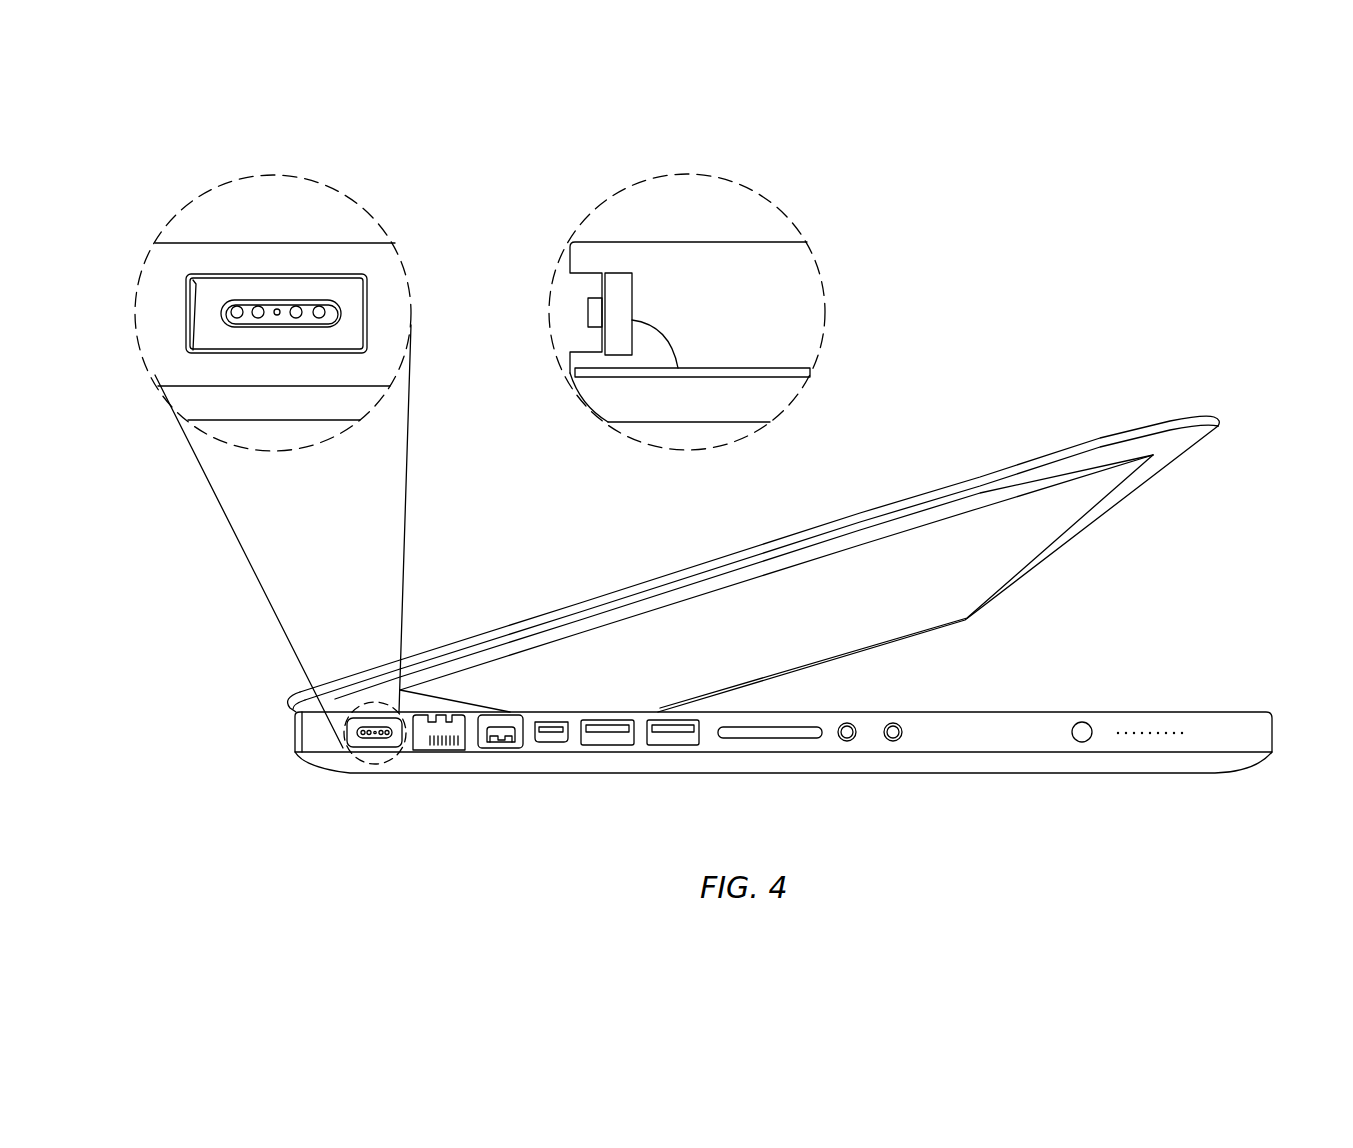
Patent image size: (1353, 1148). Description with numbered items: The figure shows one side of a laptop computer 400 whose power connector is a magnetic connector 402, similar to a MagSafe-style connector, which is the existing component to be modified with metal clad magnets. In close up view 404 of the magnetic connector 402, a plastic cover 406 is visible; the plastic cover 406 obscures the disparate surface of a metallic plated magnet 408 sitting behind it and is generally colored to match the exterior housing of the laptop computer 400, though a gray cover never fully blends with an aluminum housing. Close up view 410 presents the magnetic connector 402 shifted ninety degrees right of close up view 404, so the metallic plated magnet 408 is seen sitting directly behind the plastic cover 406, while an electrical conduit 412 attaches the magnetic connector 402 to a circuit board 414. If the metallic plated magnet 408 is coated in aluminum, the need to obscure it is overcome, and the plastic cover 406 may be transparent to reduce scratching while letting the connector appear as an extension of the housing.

The laptop computer 400 is at (524, 617).
The magnetic connector 402 is at (237, 272).
The close up view 404 is at (367, 208).
The plastic cover 406 is at (351, 335).
The metallic plated magnet 408 is at (637, 270).
The close up view 410 is at (778, 207).
The electrical conduit 412 is at (680, 338).
The circuit board 414 is at (778, 368).